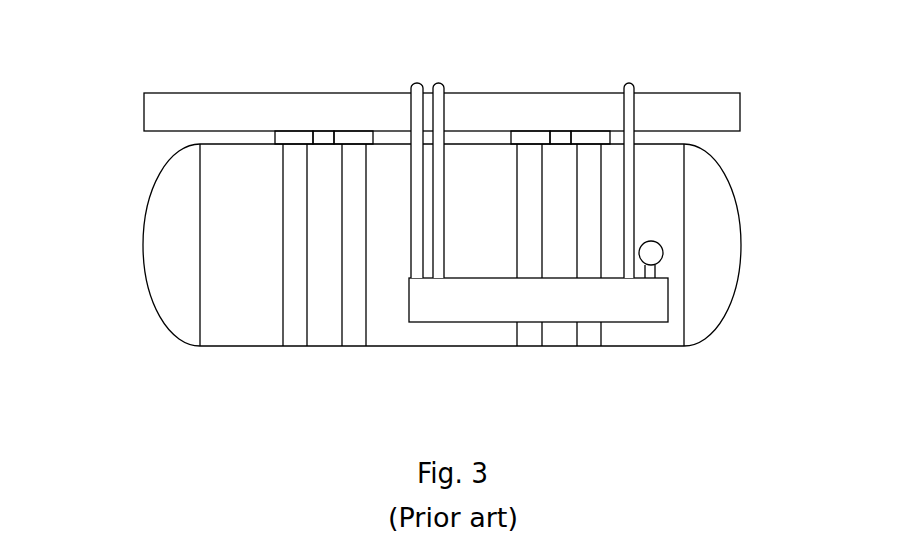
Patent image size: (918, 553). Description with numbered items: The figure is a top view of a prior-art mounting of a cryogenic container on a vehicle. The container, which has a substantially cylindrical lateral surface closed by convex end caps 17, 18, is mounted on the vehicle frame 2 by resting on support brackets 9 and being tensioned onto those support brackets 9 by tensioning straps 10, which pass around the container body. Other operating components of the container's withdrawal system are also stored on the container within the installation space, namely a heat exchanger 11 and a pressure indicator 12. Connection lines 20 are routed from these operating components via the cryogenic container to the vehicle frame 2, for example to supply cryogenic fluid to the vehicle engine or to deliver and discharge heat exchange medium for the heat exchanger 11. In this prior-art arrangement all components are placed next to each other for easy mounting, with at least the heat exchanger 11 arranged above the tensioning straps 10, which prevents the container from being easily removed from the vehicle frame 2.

The vehicle frame 2 is at (715, 92).
The support bracket 9 is at (354, 138).
The tensioning strap 10 is at (293, 337).
The heat exchanger 11 is at (605, 304).
The pressure indicator 12 is at (660, 262).
The convex end cap 17 is at (153, 248).
The convex end cap 18 is at (730, 232).
The connection line 20 is at (418, 83).